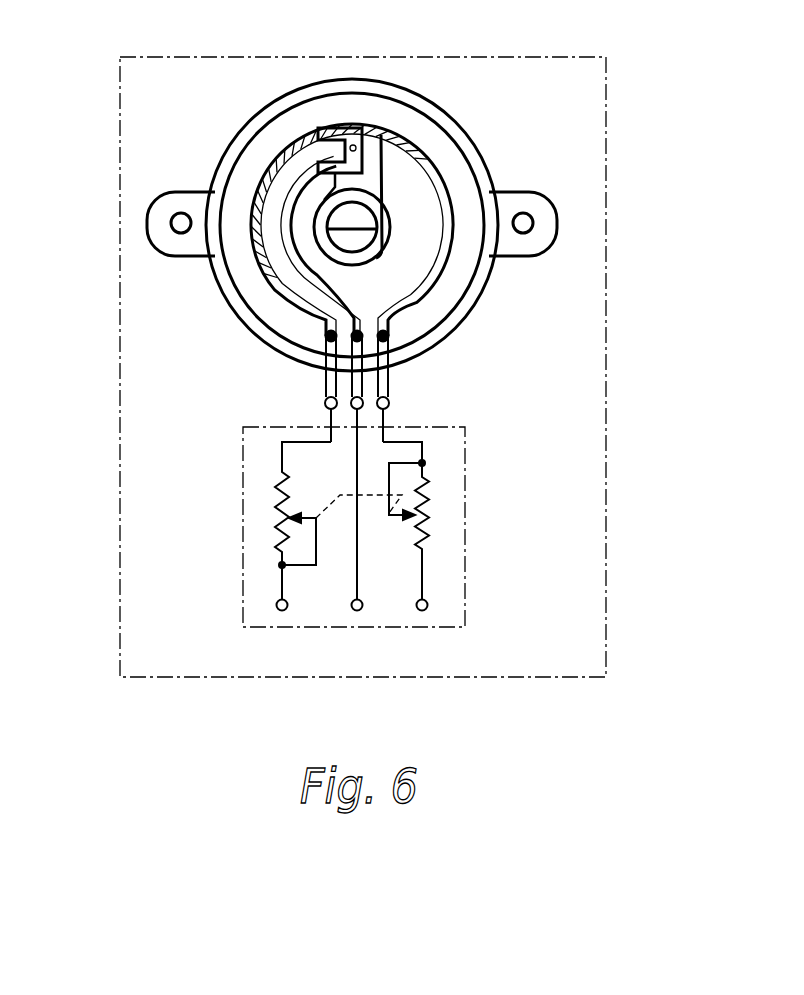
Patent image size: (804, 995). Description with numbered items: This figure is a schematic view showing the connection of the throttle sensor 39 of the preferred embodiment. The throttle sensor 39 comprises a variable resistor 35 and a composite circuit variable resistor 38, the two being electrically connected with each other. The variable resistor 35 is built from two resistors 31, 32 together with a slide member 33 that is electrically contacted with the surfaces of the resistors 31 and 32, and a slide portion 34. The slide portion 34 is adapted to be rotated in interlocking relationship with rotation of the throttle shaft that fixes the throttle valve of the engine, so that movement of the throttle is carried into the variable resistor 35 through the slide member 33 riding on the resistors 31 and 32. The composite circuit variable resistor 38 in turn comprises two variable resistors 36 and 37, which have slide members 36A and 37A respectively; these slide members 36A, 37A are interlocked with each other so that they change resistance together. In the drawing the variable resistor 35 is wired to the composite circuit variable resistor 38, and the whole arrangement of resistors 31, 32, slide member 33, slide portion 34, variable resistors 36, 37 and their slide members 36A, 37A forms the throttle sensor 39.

The resistor 31 is at (260, 195).
The resistor 32 is at (298, 183).
The slide member 33 is at (325, 123).
The slide portion 34 is at (370, 197).
The variable resistor 35 is at (485, 162).
The variable resistor 36 is at (280, 493).
The slide member 36A is at (305, 520).
The variable resistor 37 is at (430, 527).
The slide member 37A is at (398, 518).
The composite circuit variable resistor 38 is at (379, 595).
The throttle sensor 39 is at (605, 445).